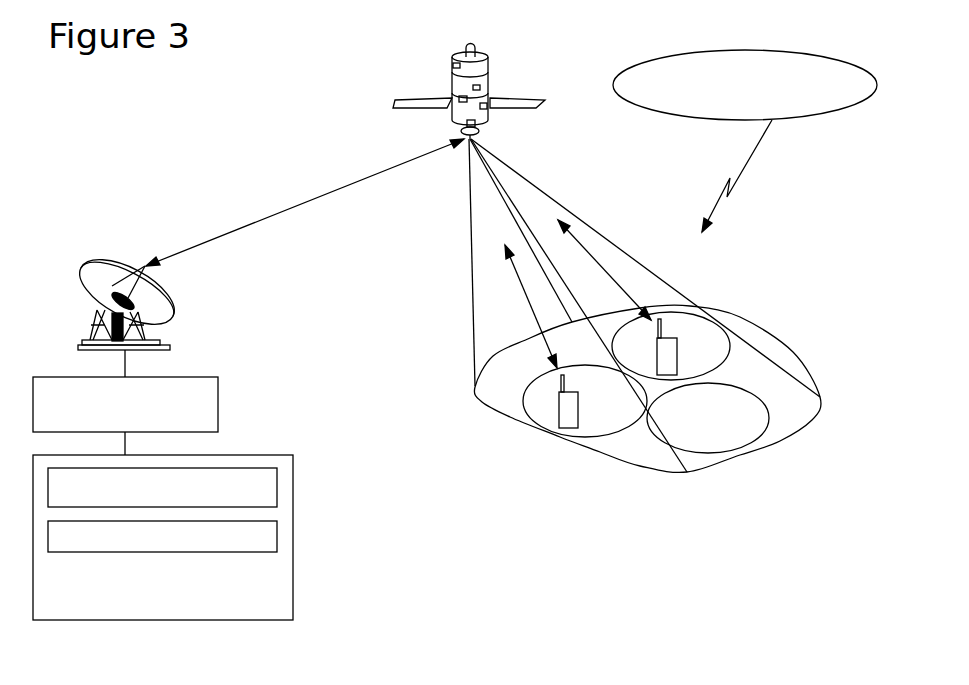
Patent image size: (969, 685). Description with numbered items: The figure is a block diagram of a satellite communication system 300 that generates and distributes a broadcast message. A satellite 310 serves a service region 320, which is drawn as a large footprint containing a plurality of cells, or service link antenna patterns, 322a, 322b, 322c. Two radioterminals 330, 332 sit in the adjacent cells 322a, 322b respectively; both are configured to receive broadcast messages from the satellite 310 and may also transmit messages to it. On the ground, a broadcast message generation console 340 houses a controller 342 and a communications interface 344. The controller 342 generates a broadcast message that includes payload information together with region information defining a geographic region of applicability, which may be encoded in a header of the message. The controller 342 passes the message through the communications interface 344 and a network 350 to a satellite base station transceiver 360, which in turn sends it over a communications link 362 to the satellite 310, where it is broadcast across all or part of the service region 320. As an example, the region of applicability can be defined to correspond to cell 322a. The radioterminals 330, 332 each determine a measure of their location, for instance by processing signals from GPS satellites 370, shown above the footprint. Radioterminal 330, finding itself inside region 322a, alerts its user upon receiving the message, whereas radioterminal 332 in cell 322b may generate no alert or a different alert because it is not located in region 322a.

The satellite communication system 300 is at (368, 53).
The satellite 310 is at (488, 78).
The service region 320 is at (793, 352).
The cell 322a is at (730, 346).
The cell 322b is at (607, 434).
The cell 322c is at (771, 419).
The radioterminal 330 is at (677, 362).
The radioterminal 332 is at (580, 413).
The broadcast message generation console 340 is at (194, 537).
The controller 342 is at (229, 547).
The communications interface 344 is at (262, 499).
The network 350 is at (218, 403).
The satellite base station transceiver 360 is at (170, 345).
The communications link 362 is at (360, 181).
The GPS satellites 370 is at (760, 103).